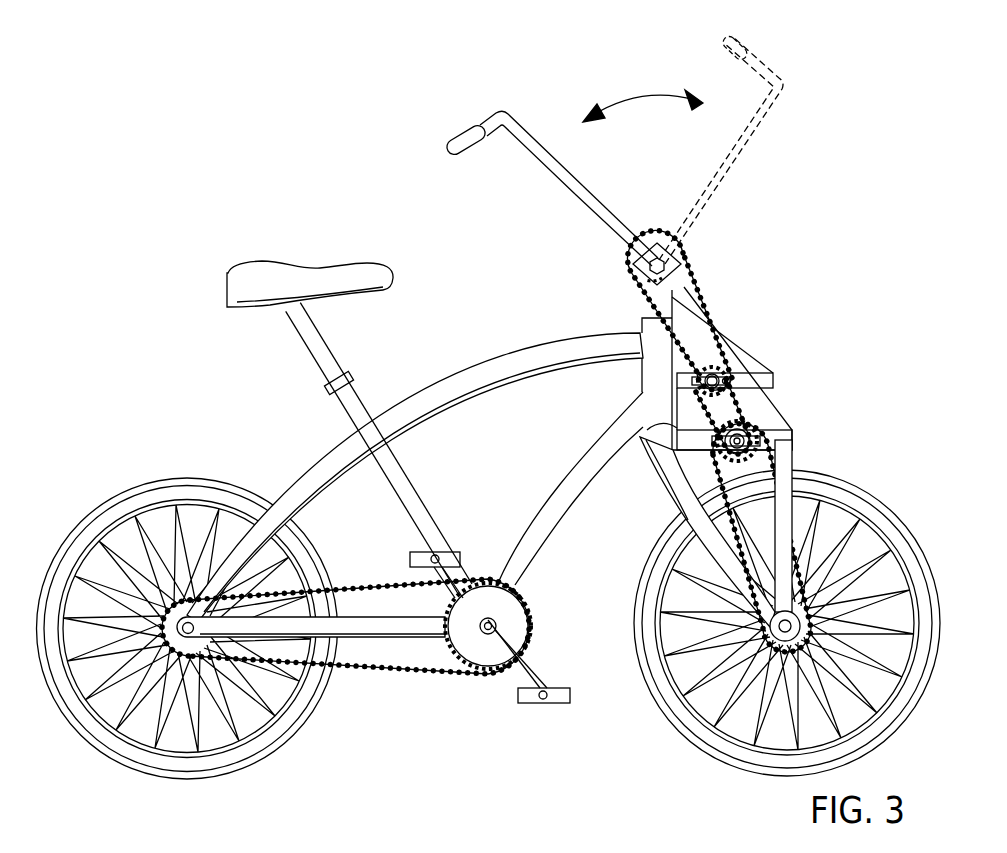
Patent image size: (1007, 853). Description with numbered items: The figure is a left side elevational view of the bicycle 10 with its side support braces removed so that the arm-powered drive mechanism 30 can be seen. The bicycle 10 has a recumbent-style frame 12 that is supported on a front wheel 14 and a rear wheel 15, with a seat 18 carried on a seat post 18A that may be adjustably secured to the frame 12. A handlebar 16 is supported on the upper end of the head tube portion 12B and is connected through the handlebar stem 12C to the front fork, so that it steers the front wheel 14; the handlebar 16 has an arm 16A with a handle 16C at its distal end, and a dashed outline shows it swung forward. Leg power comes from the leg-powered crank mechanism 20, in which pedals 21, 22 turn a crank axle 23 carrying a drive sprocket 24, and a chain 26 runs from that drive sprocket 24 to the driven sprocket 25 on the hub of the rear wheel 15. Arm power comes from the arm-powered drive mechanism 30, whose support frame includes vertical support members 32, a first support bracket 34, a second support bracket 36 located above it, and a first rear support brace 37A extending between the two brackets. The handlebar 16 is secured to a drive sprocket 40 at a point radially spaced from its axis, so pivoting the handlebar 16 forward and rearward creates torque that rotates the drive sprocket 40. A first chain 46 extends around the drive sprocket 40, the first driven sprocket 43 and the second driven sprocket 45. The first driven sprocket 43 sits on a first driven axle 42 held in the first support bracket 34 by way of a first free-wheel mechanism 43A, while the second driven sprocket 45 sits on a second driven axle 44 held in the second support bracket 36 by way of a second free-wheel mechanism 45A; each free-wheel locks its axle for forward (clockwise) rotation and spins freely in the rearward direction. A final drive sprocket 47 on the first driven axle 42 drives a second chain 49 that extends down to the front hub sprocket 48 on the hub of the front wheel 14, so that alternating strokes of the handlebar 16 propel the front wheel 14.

The bicycle 10 is at (893, 42).
The frame 12 is at (505, 352).
The head tube portion 12B is at (643, 380).
The handlebar stem 12C is at (641, 320).
The front wheel 14 is at (887, 507).
The rear wheel 15 is at (197, 477).
The handlebar 16 is at (576, 170).
The arm 16A is at (599, 213).
The handle 16C is at (474, 128).
The seat 18 is at (270, 266).
The seat post 18A is at (297, 328).
The leg-powered crank mechanism 20 is at (396, 750).
The pedal 21 is at (560, 704).
The pedal 22 is at (410, 557).
The crank axle 23 is at (488, 636).
The drive sprocket 24 is at (540, 615).
The driven sprocket 25 is at (200, 660).
The chain 26 is at (345, 672).
The arm-powered drive mechanism 30 is at (823, 274).
The vertical support member 32 is at (777, 393).
The first support bracket 34 is at (790, 447).
The second support bracket 36 is at (777, 378).
The first rear support brace 37A is at (672, 412).
The drive sprocket 40 is at (630, 278).
The first driven axle 42 is at (753, 440).
The first driven sprocket 43 is at (757, 410).
The first free-wheel mechanism 43A is at (783, 418).
The second driven axle 44 is at (735, 372).
The second driven sprocket 45 is at (698, 366).
The second free-wheel mechanism 45A is at (730, 380).
The first chain 46 is at (706, 275).
The final drive sprocket 47 is at (687, 487).
The front hub sprocket 48 is at (748, 648).
The second chain 49 is at (765, 600).